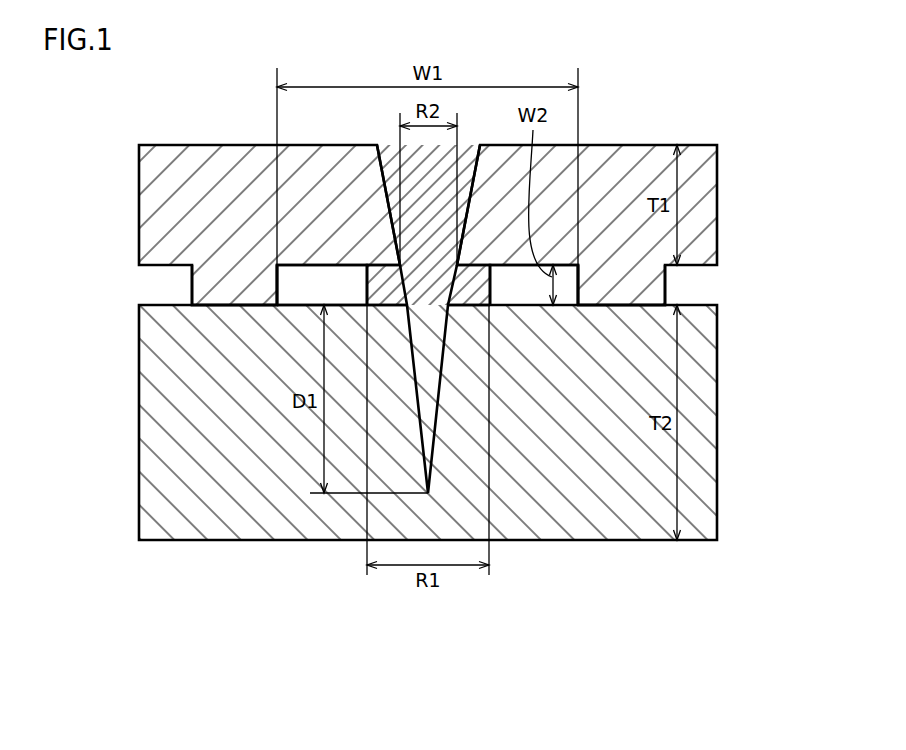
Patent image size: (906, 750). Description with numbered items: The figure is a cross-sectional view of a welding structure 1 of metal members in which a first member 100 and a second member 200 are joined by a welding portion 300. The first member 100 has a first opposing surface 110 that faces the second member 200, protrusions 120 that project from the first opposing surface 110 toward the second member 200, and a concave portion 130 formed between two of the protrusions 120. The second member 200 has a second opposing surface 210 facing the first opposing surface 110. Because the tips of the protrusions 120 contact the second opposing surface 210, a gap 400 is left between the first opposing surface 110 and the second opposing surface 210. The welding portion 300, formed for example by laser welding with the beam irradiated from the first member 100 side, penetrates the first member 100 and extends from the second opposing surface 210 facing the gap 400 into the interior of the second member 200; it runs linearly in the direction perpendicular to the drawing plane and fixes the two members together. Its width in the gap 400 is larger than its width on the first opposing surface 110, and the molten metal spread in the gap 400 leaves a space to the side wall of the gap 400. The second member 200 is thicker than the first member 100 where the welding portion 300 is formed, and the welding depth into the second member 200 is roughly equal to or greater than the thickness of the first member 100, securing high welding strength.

The welding structure 1 is at (738, 122).
The first member 100 is at (707, 205).
The first opposing surface 110 is at (506, 268).
The protrusion 120 is at (233, 286).
The concave portion 130 is at (278, 281).
The second member 200 is at (707, 427).
The second opposing surface 210 is at (347, 303).
The welding portion 300 is at (469, 158).
The gap 400 is at (530, 290).